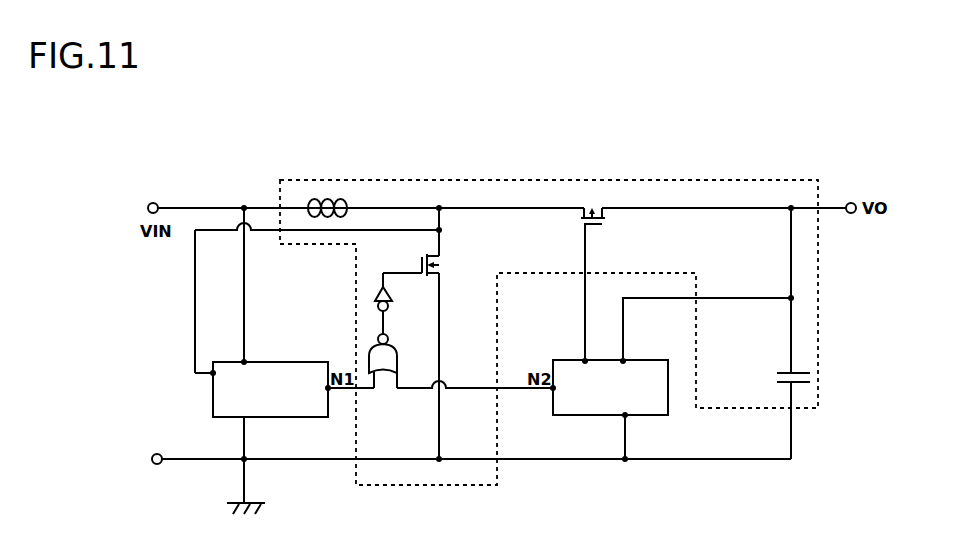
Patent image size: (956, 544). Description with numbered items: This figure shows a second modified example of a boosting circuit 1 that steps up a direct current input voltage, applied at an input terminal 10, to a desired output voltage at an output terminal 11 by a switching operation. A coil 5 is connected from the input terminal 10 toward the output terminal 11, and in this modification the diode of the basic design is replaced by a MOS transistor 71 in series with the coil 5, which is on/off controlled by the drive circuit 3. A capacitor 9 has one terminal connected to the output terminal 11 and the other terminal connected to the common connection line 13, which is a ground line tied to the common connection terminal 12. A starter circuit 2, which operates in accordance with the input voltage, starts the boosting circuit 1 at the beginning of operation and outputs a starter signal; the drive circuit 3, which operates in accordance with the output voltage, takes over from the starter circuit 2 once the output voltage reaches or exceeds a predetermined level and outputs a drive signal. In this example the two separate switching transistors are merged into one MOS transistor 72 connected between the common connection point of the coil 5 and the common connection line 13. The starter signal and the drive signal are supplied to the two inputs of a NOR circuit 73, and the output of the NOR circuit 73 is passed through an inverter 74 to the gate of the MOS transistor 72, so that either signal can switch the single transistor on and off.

The boosting circuit 1 is at (745, 178).
The starter circuit 2 is at (287, 361).
The drive circuit 3 is at (563, 359).
The coil 5 is at (320, 198).
The capacitor 9 is at (777, 378).
The input terminal 10 is at (153, 202).
The output terminal 11 is at (851, 202).
The common connection terminal 12 is at (156, 453).
The common connection line 13 is at (320, 462).
The MOS transistor 71 is at (606, 217).
The MOS transistor 72 is at (433, 279).
The NOR circuit 73 is at (372, 350).
The inverter 74 is at (376, 293).